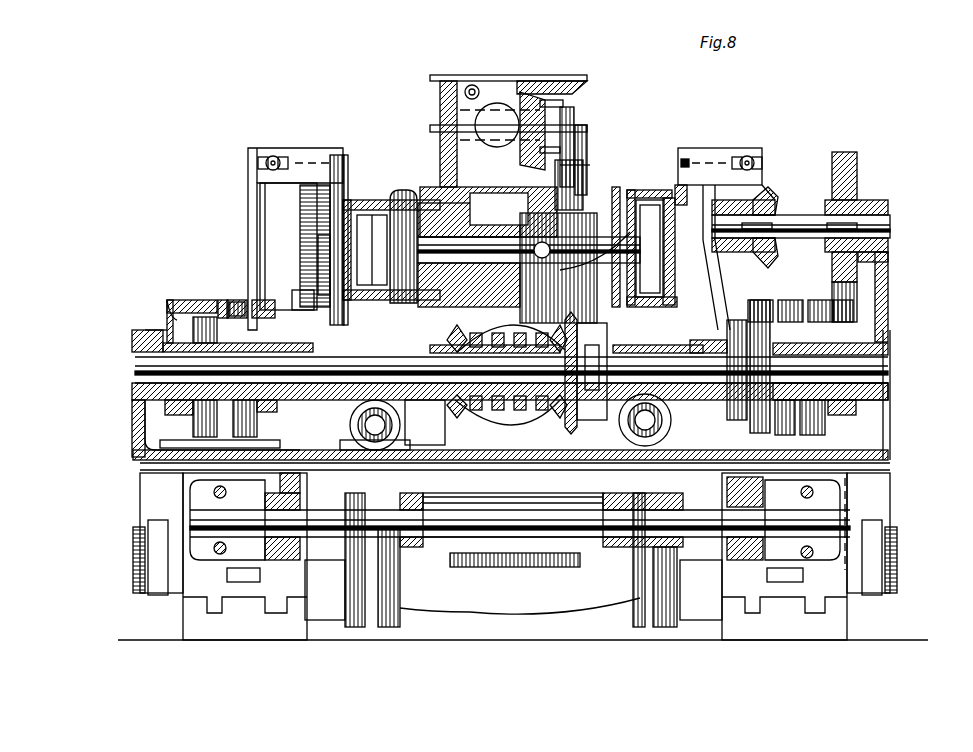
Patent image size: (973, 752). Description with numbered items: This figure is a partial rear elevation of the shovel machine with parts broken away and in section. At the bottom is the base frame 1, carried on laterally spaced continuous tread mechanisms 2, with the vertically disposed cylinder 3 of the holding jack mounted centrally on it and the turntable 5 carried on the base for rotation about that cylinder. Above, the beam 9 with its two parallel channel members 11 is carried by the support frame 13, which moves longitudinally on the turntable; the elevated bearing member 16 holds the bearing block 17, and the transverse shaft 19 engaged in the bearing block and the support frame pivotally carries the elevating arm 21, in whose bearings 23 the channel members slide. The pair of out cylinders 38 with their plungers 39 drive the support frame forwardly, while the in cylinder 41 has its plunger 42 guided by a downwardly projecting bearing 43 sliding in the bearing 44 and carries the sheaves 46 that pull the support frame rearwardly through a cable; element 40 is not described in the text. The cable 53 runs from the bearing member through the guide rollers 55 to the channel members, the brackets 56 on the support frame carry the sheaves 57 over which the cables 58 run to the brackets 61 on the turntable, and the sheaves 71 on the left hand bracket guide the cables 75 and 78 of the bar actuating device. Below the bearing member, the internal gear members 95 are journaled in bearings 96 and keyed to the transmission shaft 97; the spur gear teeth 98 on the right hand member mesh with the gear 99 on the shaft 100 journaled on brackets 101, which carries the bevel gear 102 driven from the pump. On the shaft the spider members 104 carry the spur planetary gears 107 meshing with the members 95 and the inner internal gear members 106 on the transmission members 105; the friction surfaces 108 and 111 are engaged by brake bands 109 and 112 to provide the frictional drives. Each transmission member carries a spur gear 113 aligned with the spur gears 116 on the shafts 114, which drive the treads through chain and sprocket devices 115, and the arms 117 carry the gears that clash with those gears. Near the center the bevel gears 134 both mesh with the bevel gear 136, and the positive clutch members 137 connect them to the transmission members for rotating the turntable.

The base frame 1 is at (582, 558).
The continuous tread mechanisms 2 is at (265, 640).
The cylinder 3 is at (582, 165).
The turntable 5 is at (860, 465).
The beam 9 is at (662, 273).
The channel members 11 is at (650, 249).
The support frame 13 is at (440, 180).
The bearing member 16 is at (575, 195).
The bearing block 17 is at (508, 247).
The shaft 19 is at (630, 232).
The elevating arm 21 is at (445, 185).
The bearings 23 is at (680, 175).
The hydraulic cylinders 38 is at (395, 455).
The plungers 39 is at (385, 455).
The lever rod 40 is at (570, 128).
The hydraulic cylinder 41 is at (520, 80).
The plunger 42 is at (565, 103).
The bearing 43 is at (576, 158).
The bearing 44 is at (590, 152).
The sheaves 46 is at (440, 106).
The cable 53 is at (325, 248).
The rollers 55 is at (398, 195).
The brackets 56 is at (310, 200).
The sheaves 57 is at (348, 172).
The cables 58 is at (348, 158).
The brackets 61 is at (326, 147).
The sheaves 71 is at (345, 310).
The cable 75 is at (322, 290).
The cable 78 is at (316, 258).
The internal gear members 95 is at (200, 310).
The bearings 96 is at (148, 330).
The transmission shaft 97 is at (515, 269).
The spur gear teeth 98 is at (860, 318).
The gear 99 is at (870, 268).
The shaft 100 is at (892, 228).
The brackets 101 is at (888, 204).
The bevel gear 102 is at (775, 192).
The spider members 104 is at (150, 343).
The transmission members 105 is at (505, 436).
The internal gear members 106 is at (140, 475).
The spur planetary gears 107 is at (145, 438).
The external friction surfaces 108 is at (222, 300).
The brake bands 109 is at (170, 300).
The external friction surfaces 111 is at (237, 300).
The brake bands 112 is at (262, 300).
The spur gear 113 is at (290, 412).
The shafts 114 is at (405, 570).
The chain and sprocket devices 115 is at (520, 609).
The spur gears 116 is at (310, 595).
The arms 117 is at (440, 337).
The bevel gears 134 is at (522, 410).
The bevel gear 136 is at (580, 326).
The positive clutch members 137 is at (430, 460).